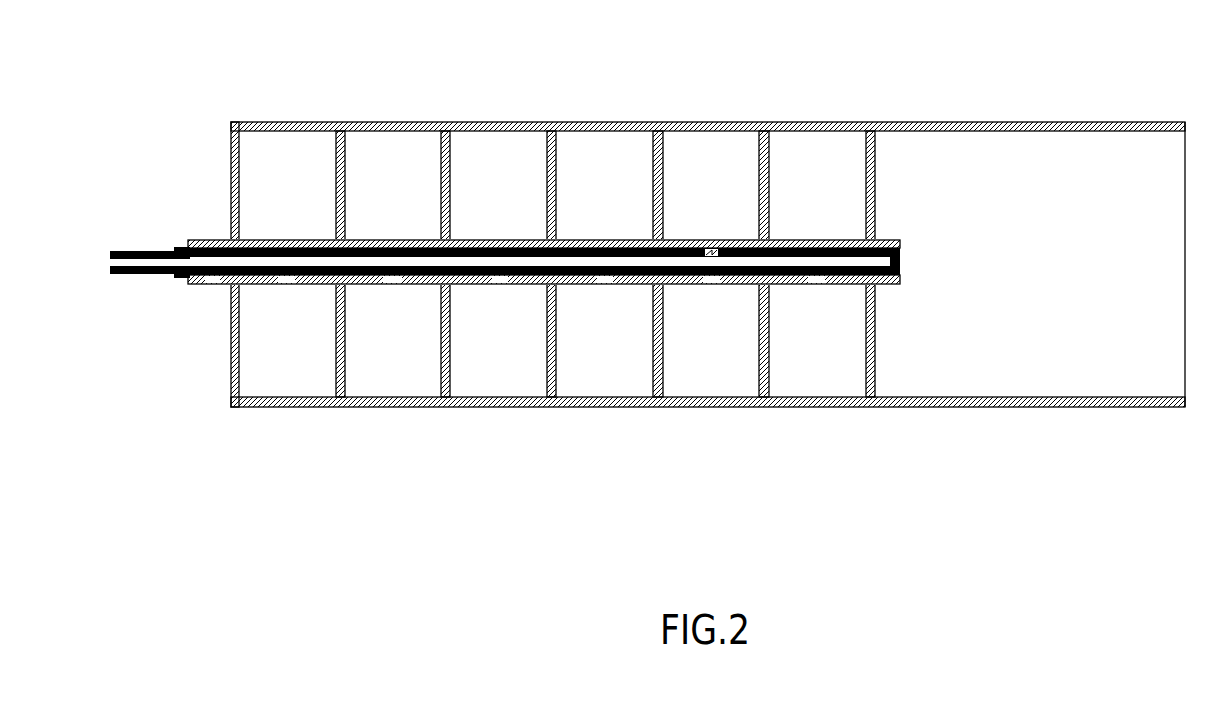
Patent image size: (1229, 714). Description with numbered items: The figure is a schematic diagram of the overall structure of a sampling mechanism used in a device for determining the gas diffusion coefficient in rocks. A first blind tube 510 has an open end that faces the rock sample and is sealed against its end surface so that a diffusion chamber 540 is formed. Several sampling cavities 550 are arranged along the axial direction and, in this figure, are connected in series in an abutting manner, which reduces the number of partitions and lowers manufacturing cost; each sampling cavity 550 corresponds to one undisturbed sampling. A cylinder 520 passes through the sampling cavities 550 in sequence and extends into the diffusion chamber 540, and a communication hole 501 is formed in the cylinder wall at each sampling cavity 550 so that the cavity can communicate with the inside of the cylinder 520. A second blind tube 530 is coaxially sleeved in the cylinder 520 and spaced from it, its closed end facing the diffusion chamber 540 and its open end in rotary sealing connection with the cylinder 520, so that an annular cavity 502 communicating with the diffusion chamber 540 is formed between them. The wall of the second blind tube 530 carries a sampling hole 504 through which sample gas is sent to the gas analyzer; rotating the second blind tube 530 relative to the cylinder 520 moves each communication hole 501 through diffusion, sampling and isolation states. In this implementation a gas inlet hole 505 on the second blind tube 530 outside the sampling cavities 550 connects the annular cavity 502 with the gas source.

The communication hole 501 is at (498, 285).
The annular cavity 502 is at (583, 285).
The sampling hole 504 is at (712, 248).
The gas inlet hole 505 is at (213, 286).
The first blind tube 510 is at (993, 400).
The cylinder 520 is at (780, 287).
The second blind tube 530 is at (685, 285).
The diffusion chamber 540 is at (1059, 243).
The sampling cavity 550 is at (817, 172).